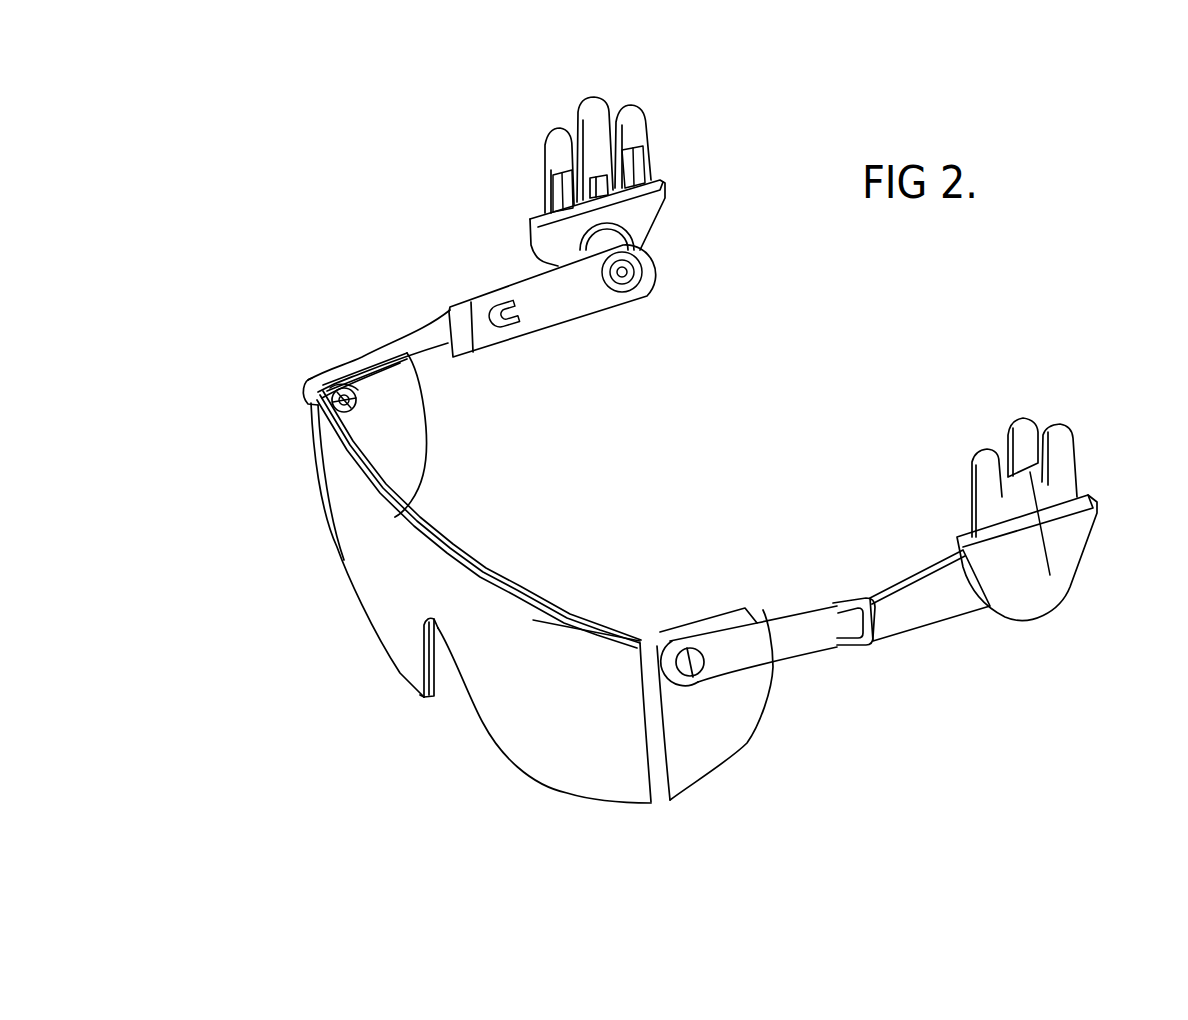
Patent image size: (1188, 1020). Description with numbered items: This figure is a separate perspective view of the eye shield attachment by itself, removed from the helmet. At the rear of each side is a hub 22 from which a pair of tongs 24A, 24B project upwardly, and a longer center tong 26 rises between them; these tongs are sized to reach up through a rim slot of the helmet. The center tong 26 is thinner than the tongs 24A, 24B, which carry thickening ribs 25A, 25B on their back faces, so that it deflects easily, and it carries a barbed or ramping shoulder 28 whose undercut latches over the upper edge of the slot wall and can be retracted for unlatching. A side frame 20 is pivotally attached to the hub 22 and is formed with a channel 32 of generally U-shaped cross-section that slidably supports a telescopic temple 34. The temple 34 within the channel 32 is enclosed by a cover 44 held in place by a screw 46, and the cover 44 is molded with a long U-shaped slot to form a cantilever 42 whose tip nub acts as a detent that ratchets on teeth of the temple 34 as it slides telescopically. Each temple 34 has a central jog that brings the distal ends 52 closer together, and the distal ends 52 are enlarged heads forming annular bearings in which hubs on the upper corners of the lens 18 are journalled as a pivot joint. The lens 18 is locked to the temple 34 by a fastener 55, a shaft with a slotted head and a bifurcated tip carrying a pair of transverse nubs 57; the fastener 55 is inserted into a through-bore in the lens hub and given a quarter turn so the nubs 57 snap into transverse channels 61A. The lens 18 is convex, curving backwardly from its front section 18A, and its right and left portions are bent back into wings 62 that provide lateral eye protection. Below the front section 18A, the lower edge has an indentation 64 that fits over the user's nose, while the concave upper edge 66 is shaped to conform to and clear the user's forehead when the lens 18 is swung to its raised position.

The lens 18 is at (343, 577).
The front section 18A is at (433, 598).
The side frame 20 is at (863, 652).
The hub 22 is at (530, 217).
The tong 24A is at (633, 105).
The tong 24B is at (548, 135).
The thickening rib 25A is at (645, 170).
The thickening rib 25B is at (543, 183).
The center tong 26 is at (580, 100).
The shoulder 28 is at (1050, 575).
The channel 32 is at (473, 290).
The telescopic temple 34 is at (410, 327).
The cantilever 42 is at (513, 333).
The cover 44 is at (577, 307).
The screw 46 is at (633, 277).
The distal end 52 is at (310, 380).
The fastener 55 is at (357, 410).
The transverse nub 57 is at (357, 403).
The transverse channel 61A is at (353, 388).
The wing 62 is at (410, 410).
The indentation 64 is at (440, 700).
The upper edge 66 is at (500, 610).